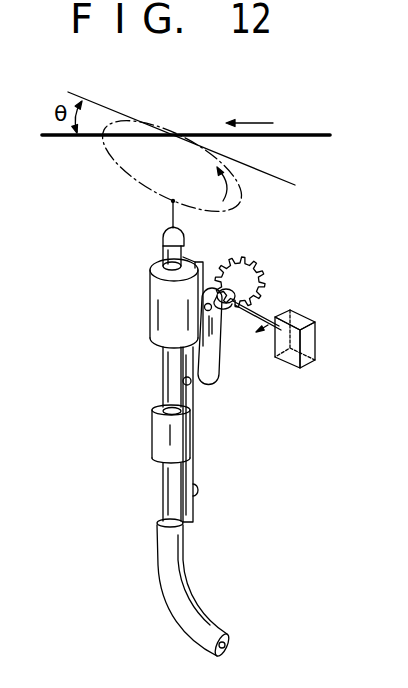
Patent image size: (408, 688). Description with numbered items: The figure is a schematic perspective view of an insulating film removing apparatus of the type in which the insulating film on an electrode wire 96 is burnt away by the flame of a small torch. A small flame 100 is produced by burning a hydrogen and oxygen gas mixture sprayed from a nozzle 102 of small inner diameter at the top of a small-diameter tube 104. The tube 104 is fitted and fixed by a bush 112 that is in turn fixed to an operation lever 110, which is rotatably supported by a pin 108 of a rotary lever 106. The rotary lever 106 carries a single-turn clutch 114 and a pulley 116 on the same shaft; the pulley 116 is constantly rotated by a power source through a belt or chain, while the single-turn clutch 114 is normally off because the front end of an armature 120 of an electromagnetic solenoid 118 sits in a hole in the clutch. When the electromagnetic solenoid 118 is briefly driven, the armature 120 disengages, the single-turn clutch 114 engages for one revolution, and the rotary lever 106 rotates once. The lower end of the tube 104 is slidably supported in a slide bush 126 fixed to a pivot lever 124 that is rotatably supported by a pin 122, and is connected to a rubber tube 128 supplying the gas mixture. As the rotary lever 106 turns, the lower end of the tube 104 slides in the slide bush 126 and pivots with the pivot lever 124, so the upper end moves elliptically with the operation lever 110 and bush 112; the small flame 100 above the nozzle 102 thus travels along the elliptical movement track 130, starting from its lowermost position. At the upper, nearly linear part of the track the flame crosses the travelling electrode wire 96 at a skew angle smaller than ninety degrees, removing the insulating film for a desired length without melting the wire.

The electrode wire 96 is at (298, 133).
The small flame 100 is at (170, 203).
The nozzle 102 is at (168, 213).
The tube 104 is at (163, 375).
The rotary lever 106 is at (221, 365).
The pin 108 is at (191, 396).
The operation lever 110 is at (198, 262).
The bush 112 is at (150, 320).
The single-turn clutch 114 is at (226, 268).
The pulley 116 is at (262, 283).
The electromagnetic solenoid 118 is at (316, 346).
The armature 120 is at (280, 321).
The pin 122 is at (199, 495).
The pivot lever 124 is at (219, 440).
The slide bush 126 is at (152, 447).
The rubber tube 128 is at (165, 601).
The movement track 130 is at (128, 181).